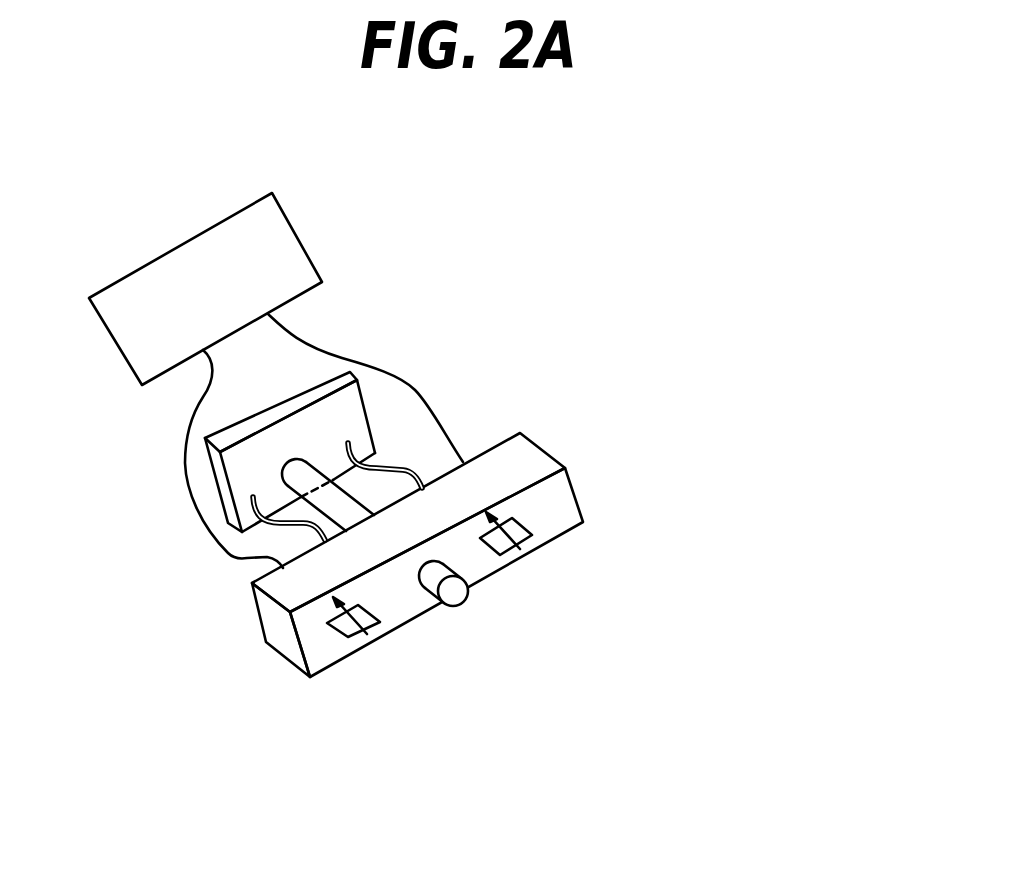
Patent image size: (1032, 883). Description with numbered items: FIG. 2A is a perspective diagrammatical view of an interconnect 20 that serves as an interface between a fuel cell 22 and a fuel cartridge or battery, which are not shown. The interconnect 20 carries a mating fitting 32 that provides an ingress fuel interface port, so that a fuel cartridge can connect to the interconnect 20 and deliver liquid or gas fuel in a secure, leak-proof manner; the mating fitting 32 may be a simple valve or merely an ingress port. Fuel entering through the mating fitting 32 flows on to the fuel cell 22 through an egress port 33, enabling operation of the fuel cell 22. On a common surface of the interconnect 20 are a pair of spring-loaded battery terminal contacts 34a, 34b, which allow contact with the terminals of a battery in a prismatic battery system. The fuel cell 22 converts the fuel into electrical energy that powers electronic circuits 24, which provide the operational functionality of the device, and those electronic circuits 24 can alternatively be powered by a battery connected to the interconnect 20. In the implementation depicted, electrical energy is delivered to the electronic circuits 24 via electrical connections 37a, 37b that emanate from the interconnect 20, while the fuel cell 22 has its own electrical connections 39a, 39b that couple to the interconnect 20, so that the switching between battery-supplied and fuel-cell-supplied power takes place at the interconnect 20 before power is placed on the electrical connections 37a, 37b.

The interconnect 20 is at (315, 697).
The fuel cell 22 is at (368, 409).
The electronic circuits 24 is at (297, 235).
The mating fitting 32 is at (468, 609).
The egress port 33 is at (307, 457).
The spring-loaded battery terminal contact 34a is at (378, 646).
The spring-loaded battery terminal contact 34b is at (873, 750).
The electrical connection 37a is at (200, 399).
The electrical connection 37b is at (313, 347).
The electrical connection 39a is at (283, 527).
The electrical connection 39b is at (405, 468).